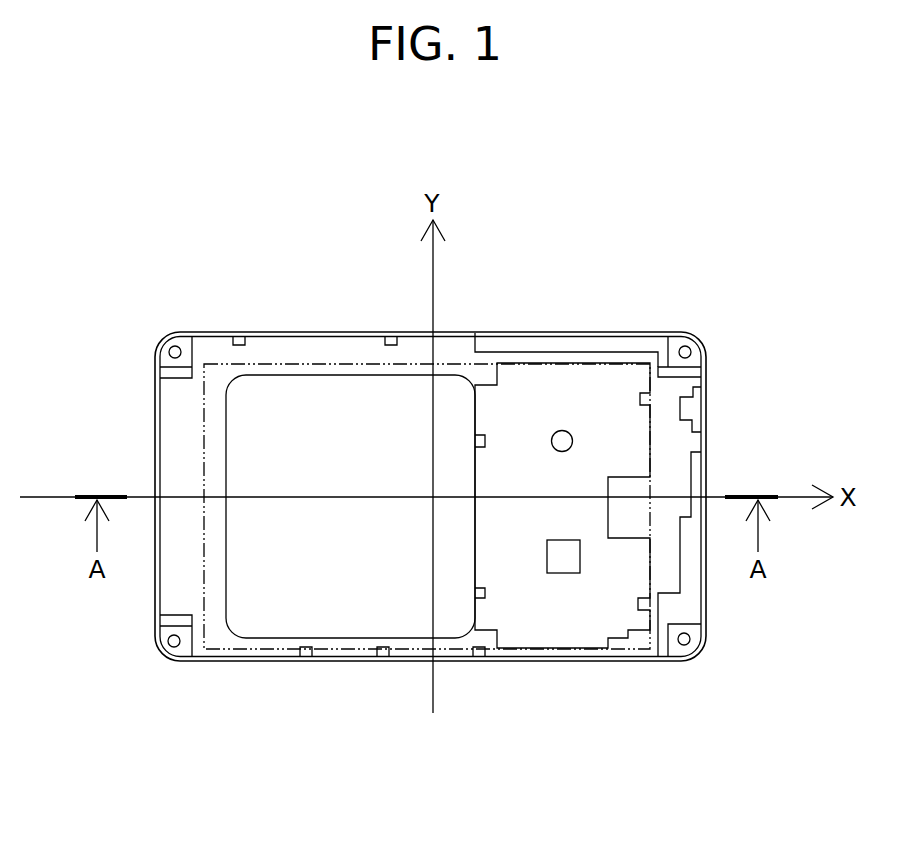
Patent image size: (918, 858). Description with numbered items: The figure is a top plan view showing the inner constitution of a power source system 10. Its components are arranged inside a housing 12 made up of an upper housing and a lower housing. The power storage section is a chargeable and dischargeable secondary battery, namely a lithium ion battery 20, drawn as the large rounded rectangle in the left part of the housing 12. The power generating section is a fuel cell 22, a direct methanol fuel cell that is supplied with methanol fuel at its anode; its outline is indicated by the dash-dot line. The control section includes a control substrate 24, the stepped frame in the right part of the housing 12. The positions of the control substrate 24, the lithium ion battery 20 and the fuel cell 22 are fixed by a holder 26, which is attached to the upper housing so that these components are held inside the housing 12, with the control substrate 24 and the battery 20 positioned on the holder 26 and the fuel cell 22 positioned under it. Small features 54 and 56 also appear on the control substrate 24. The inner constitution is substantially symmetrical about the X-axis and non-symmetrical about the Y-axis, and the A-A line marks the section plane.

The power source system 10 is at (719, 289).
The housing 12 is at (155, 410).
The lithium ion battery 20 is at (257, 397).
The fuel cell 22 is at (227, 640).
The control substrate 24 is at (615, 397).
The holder 26 is at (672, 385).
The electronic component 54 is at (563, 563).
The hole 56 is at (562, 430).